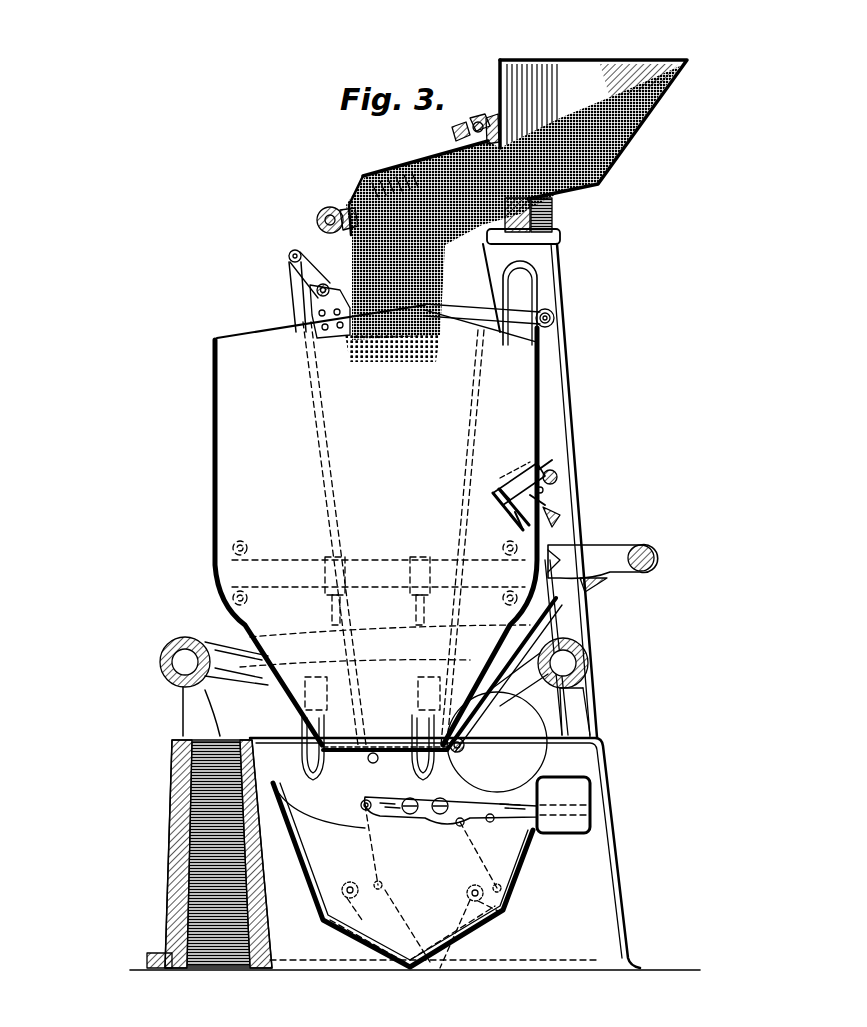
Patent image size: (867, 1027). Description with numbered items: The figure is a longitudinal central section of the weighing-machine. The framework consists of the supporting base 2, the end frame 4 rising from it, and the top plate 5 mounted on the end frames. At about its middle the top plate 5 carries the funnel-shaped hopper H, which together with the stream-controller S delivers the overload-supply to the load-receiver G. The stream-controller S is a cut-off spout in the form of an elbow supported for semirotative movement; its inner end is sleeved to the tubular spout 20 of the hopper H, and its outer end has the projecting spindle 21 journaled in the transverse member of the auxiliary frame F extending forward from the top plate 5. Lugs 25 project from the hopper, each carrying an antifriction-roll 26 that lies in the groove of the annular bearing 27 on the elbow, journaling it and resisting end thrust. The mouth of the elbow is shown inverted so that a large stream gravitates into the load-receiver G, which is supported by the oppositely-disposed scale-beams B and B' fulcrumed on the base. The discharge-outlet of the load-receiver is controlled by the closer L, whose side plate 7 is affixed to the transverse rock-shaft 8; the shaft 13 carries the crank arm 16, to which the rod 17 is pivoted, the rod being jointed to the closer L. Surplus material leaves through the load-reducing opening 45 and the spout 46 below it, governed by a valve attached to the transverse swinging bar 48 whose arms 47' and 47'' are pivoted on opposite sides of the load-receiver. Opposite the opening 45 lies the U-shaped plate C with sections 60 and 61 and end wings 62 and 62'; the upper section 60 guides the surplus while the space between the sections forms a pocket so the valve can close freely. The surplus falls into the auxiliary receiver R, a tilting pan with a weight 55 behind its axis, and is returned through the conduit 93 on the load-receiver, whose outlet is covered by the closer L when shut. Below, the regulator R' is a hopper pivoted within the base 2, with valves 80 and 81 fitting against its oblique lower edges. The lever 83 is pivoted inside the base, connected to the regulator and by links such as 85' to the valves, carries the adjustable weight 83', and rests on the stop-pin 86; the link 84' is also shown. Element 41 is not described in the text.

The supporting base 2 is at (606, 880).
The end frame 4 is at (556, 371).
The top plate 5 is at (560, 215).
The plate 7 is at (497, 742).
The transverse rock-shaft 8 is at (456, 758).
The shaft 13 is at (317, 294).
The crank arm 16 is at (305, 272).
The rod 17 is at (289, 280).
The tubular spout 20 is at (553, 216).
The projecting spindle 21 is at (317, 222).
The lug 25 is at (497, 118).
The antifriction-roll 26 is at (477, 121).
The annular bearing 27 is at (517, 110).
The lug 41 is at (452, 133).
The load-reducing opening 45 is at (545, 497).
The spout 46 is at (560, 520).
The arm of swinging bar 47' is at (573, 505).
The arm of swinging bar 47'' is at (570, 453).
The transverse swinging bar 48 is at (571, 470).
The weight 55 is at (650, 552).
The upper section of plate 60 is at (512, 482).
The lower section of plate 61 is at (503, 497).
The wing 62 is at (522, 435).
The wing 62' is at (496, 528).
The regulator valve 80 is at (368, 935).
The regulator valve 81 is at (470, 935).
The lever 83 is at (449, 789).
The weight 83' is at (563, 791).
The link 84' is at (386, 883).
The link 85' is at (468, 893).
The stop-pin 86 is at (494, 813).
The conduit 93 is at (527, 611).
The scale-beam B is at (214, 676).
The scale-beam B' is at (540, 686).
The plate C is at (512, 496).
The auxiliary frame F is at (334, 207).
The load-receiver G is at (384, 524).
The hopper H is at (632, 140).
The closer L is at (374, 748).
The auxiliary receiver R is at (603, 569).
The regulator R' is at (403, 875).
The stream-controller S is at (397, 173).